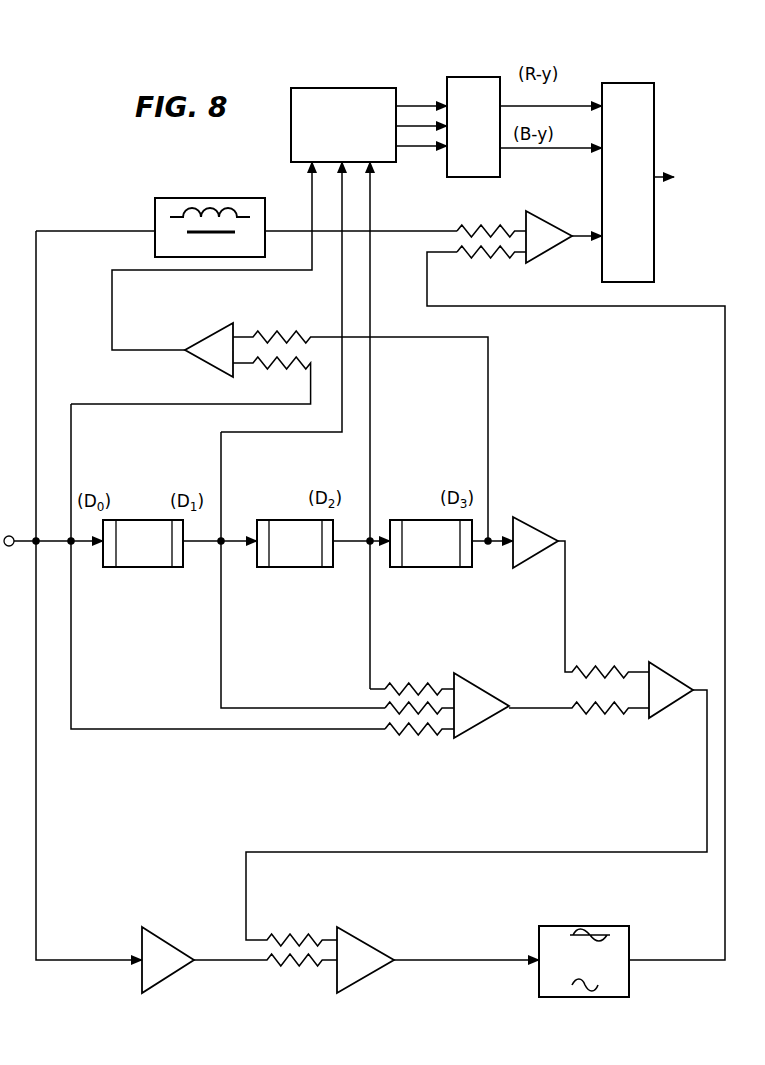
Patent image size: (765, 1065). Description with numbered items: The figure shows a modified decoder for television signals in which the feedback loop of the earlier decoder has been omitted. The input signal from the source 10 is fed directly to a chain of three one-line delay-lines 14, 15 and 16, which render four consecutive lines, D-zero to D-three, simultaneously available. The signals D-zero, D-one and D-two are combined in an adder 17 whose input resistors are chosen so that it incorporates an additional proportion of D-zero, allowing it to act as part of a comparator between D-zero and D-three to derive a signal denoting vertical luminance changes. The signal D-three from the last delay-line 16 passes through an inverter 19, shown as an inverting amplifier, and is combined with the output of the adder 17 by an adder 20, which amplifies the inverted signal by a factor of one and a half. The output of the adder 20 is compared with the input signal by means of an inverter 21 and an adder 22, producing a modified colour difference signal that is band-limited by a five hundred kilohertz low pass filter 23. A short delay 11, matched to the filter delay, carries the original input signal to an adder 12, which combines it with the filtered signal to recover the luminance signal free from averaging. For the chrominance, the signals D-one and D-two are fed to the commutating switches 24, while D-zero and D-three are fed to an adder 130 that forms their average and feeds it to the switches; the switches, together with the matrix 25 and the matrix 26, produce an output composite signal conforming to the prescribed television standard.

The source 10 is at (11, 547).
The short delay 11 is at (203, 198).
The adder 12 is at (549, 248).
The summing amplifier 130 is at (191, 353).
The delay-line 14 is at (124, 568).
The delay-line 15 is at (284, 568).
The delay-line 16 is at (425, 568).
The adder 17 is at (470, 682).
The inverter 19 is at (545, 526).
The adder 20 is at (663, 678).
The inverter 21 is at (159, 946).
The adder 22 is at (354, 946).
The 500KHz low pass filter 23 is at (599, 926).
The commutating switches 24 is at (360, 96).
The matrix 25 is at (472, 84).
The matrix 26 is at (628, 86).